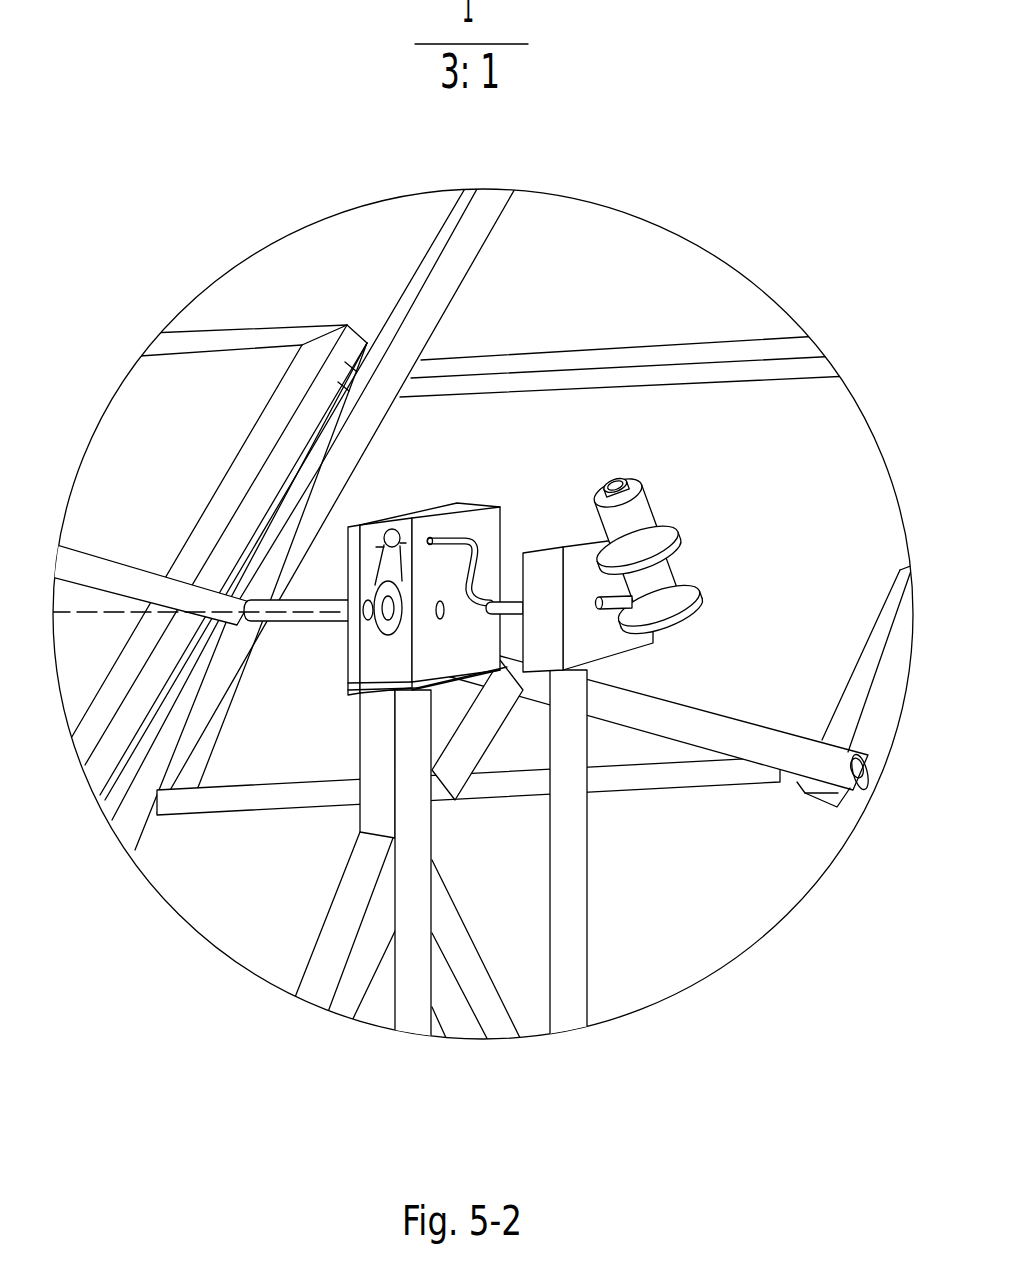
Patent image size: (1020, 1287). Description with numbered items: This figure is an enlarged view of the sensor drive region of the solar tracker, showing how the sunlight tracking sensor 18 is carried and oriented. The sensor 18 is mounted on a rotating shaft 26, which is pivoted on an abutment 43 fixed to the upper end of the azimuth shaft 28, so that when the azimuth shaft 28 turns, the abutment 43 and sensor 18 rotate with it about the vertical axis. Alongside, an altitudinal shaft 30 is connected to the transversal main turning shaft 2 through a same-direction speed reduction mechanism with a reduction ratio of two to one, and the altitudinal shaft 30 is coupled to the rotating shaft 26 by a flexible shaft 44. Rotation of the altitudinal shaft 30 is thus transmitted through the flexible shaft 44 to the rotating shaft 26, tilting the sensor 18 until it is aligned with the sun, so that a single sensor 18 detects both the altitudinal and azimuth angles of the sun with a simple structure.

The transversal main turning shaft 2 is at (300, 614).
The sunlight tracking sensor 18 is at (630, 523).
The rotating shaft 26 is at (512, 600).
The azimuth shaft 28 is at (570, 960).
The altitudinal shaft 30 is at (404, 555).
The abutment 43 is at (553, 567).
The flexible shaft 44 is at (468, 506).